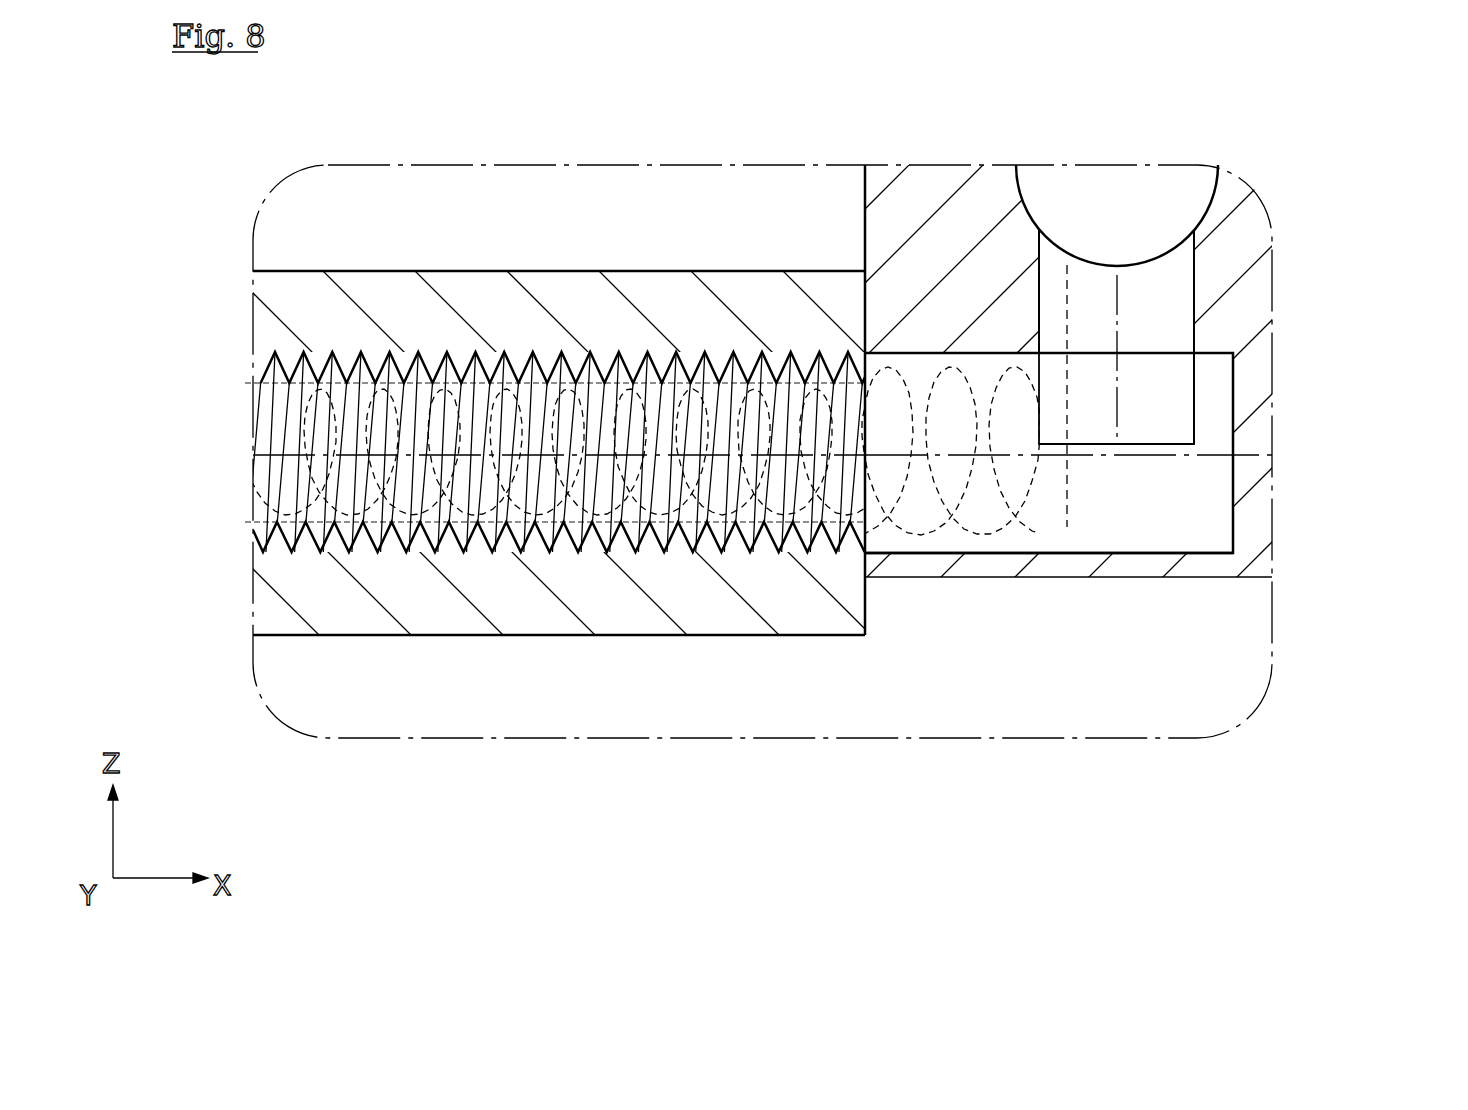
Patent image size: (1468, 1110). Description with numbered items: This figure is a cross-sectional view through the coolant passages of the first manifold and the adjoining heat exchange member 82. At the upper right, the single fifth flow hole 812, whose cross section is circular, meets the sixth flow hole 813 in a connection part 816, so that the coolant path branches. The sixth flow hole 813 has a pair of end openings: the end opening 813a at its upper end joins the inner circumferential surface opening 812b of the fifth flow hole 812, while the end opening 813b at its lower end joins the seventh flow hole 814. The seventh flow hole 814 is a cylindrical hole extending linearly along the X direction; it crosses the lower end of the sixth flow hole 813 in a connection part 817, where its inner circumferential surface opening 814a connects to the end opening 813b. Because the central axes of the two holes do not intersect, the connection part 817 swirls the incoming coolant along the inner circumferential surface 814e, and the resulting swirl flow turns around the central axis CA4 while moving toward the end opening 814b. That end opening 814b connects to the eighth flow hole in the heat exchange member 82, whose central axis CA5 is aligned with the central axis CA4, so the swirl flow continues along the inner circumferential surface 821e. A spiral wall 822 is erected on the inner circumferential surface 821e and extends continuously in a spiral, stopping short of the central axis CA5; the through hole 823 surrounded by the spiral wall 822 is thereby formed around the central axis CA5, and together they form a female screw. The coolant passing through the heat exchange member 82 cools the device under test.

The heat exchange member 82 is at (523, 627).
The inner circumferential surface 821e is at (805, 530).
The spiral wall 822 is at (625, 543).
The through hole 823 is at (243, 385).
The fifth flow hole 812 is at (1215, 188).
The inner circumferential surface opening 812b is at (1067, 265).
The sixth flow hole 813 is at (1194, 288).
The end opening 813a is at (1194, 244).
The end opening 813b is at (1182, 450).
The seventh flow hole 814 is at (1236, 528).
The inner circumferential surface opening 814a is at (1096, 443).
The end opening 814b is at (832, 514).
The inner circumferential surface 814e is at (1143, 535).
The connection part 816 is at (1024, 217).
The connection part 817 is at (1205, 375).
The central axis CA4 is at (1007, 455).
The central axis CA5 is at (438, 510).